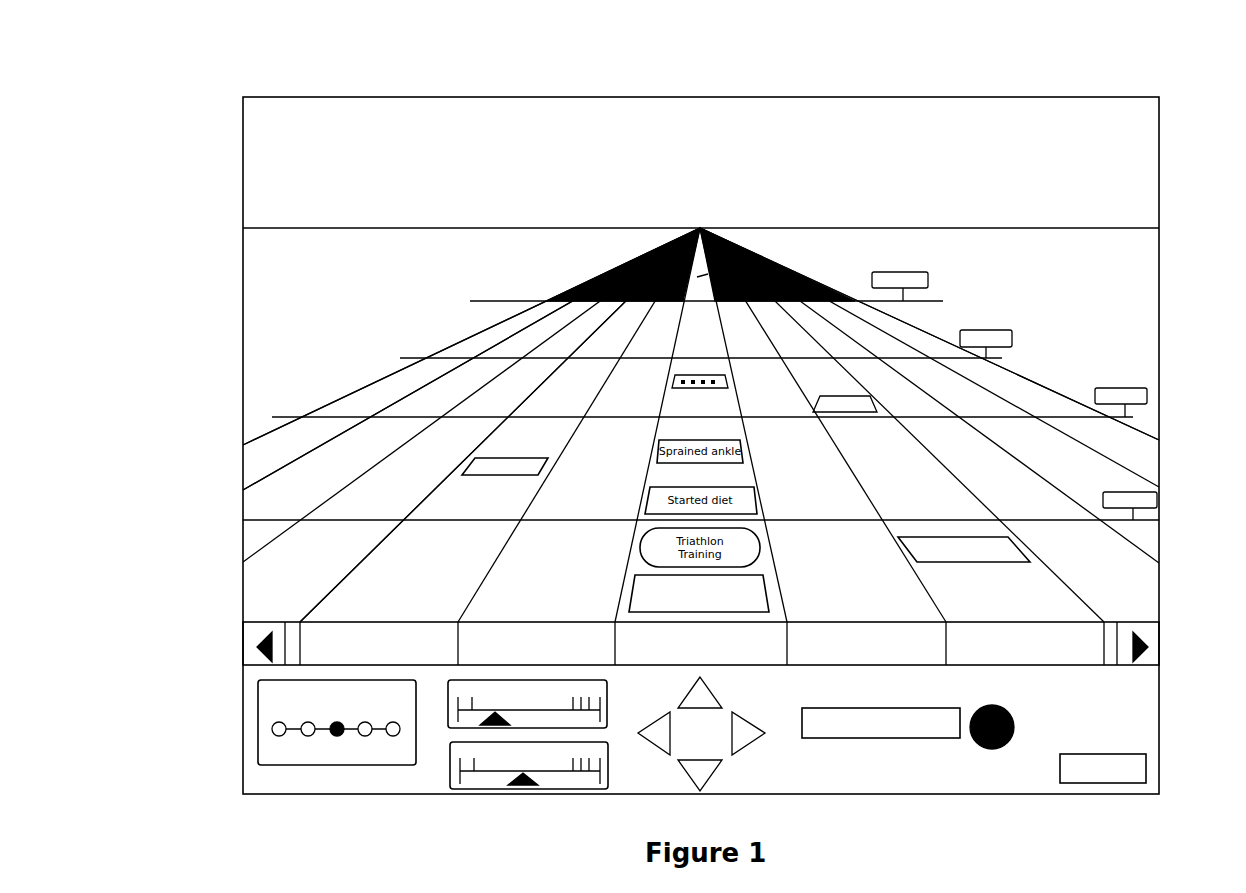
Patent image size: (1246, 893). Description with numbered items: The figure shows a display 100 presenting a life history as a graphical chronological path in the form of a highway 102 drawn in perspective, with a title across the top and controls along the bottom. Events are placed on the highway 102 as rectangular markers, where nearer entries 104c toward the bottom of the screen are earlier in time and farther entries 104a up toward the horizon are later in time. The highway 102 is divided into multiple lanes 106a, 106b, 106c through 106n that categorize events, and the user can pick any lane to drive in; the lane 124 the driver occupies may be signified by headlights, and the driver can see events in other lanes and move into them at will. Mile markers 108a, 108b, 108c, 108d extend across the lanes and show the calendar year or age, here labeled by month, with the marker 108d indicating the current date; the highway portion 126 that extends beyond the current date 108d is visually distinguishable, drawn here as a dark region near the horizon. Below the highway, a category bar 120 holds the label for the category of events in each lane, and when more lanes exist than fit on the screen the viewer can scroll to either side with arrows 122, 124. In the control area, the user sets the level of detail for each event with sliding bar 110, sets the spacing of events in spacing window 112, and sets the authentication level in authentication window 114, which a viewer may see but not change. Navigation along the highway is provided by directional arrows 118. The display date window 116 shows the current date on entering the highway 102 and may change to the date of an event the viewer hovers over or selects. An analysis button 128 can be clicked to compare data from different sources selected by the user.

The display 100 is at (868, 97).
The highway 102 is at (817, 281).
The farther entries 104a is at (872, 400).
The nearer entries 104c is at (766, 589).
The lane 106a is at (515, 328).
The lane 106b is at (470, 385).
The lane 106c is at (465, 435).
The lane 106n is at (1017, 393).
The mile marker 108a is at (1117, 491).
The mile marker 108b is at (1107, 381).
The mile marker 108c is at (1013, 326).
The mile marker for current date 108d is at (922, 268).
The sliding bar 110 is at (453, 718).
The spacing window 112 is at (503, 778).
The authentication window 114 is at (265, 727).
The display date window 116 is at (898, 733).
The directional arrows 118 is at (745, 737).
The category bar 120 is at (243, 627).
The scroll arrow 122 is at (257, 651).
The scroll arrow / driver's lane 124 is at (757, 255).
The highway portion beyond current date 126 is at (607, 273).
The analysis button 128 is at (1142, 772).